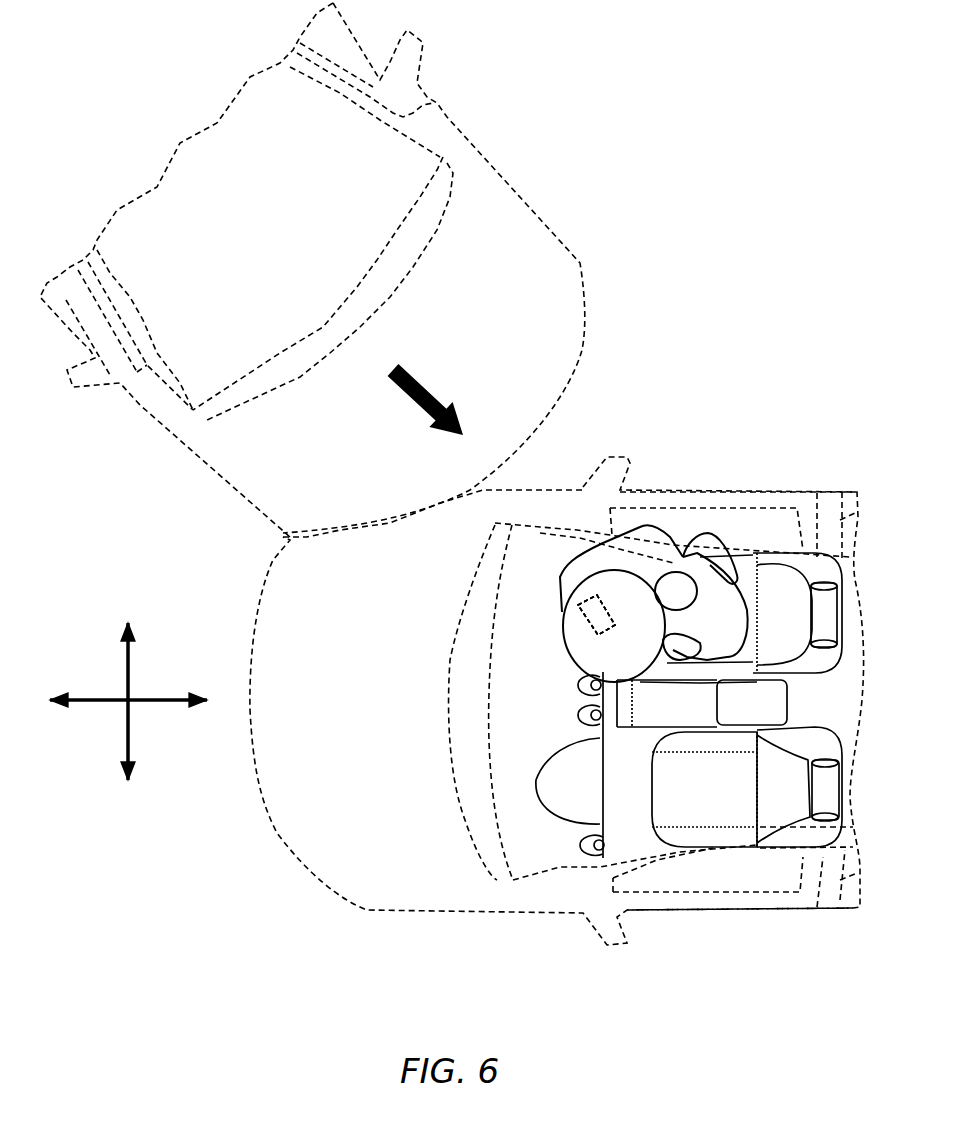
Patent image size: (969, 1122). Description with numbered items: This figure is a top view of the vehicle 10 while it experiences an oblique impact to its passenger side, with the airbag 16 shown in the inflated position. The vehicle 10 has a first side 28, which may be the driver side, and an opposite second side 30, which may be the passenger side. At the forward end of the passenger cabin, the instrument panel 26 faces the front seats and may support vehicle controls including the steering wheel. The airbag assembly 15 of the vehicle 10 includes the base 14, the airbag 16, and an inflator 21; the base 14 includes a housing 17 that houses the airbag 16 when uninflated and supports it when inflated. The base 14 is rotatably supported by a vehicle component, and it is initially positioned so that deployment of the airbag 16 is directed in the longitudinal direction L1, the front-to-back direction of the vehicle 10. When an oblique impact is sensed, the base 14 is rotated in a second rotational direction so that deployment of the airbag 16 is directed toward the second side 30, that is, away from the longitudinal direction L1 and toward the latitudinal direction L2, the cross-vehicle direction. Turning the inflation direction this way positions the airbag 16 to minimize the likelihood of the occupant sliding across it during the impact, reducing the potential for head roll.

The vehicle 10 is at (270, 842).
The base 14 is at (582, 592).
The airbag assembly 15 is at (663, 500).
The housing 17 is at (663, 500).
The inflator 21 is at (663, 500).
The airbag 16 is at (617, 598).
The instrument panel 26 is at (523, 743).
The first side 28 is at (680, 912).
The second side 30 is at (727, 492).
The longitudinal direction L1 is at (90, 705).
The latitudinal direction L2 is at (124, 664).